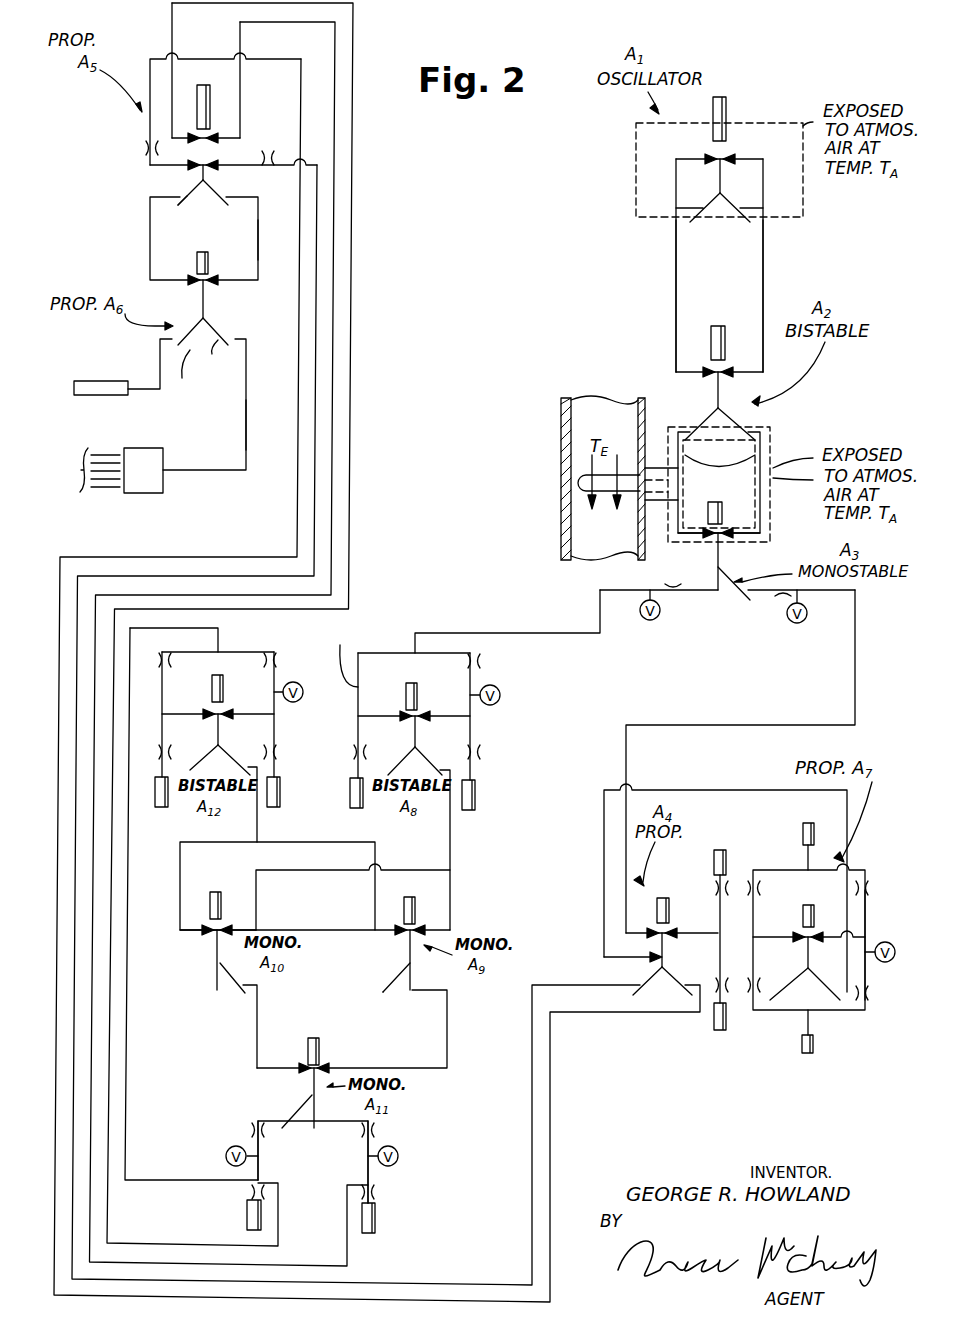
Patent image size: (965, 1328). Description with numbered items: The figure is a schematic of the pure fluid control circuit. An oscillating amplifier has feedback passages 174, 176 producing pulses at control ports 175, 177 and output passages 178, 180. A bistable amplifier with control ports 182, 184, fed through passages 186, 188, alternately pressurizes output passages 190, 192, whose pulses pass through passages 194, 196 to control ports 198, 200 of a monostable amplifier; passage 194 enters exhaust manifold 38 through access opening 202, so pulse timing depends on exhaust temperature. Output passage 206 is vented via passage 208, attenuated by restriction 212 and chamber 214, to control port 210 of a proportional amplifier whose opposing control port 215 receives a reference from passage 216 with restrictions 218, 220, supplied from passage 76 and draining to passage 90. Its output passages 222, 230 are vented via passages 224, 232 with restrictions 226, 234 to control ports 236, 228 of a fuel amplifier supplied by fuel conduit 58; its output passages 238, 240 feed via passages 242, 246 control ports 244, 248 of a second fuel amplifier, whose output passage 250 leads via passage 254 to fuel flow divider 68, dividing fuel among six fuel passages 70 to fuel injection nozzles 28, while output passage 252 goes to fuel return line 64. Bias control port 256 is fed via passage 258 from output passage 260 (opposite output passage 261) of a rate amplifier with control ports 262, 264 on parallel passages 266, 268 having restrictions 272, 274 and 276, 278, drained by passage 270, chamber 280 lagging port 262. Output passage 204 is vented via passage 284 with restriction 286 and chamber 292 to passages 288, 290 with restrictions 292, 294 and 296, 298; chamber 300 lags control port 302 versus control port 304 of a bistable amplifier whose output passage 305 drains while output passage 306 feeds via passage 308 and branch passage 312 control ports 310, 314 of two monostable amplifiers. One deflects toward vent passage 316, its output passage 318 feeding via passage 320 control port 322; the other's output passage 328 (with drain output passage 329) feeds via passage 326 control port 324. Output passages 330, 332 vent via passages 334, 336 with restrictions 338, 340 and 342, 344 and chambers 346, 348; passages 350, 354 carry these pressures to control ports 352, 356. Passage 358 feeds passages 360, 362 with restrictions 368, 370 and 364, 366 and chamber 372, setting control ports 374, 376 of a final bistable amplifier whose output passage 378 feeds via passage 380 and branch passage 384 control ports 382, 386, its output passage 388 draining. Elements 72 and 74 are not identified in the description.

The fuel injection nozzles 28 is at (73, 494).
The exhaust manifold 38 is at (562, 427).
The fuel conduit 58 is at (198, 98).
The fuel return line 64 is at (94, 380).
The fuel flow divider 68 is at (160, 486).
The fuel passages 70 is at (98, 456).
The restrictor element 72 is at (728, 98).
The restrictor element 74 is at (204, 690).
The passage 76 is at (656, 900).
The passage 90 is at (170, 802).
The feedback passage 174 is at (746, 160).
The control port 175 is at (730, 156).
The feedback passage 176 is at (686, 156).
The control port 177 is at (708, 156).
The output passage 178 is at (730, 205).
The output passage 180 is at (710, 205).
The control port 182 is at (728, 376).
The control port 184 is at (718, 376).
The passage 186 is at (763, 276).
The passage 188 is at (675, 272).
The output passage 190 is at (712, 410).
The output passage 192 is at (742, 424).
The passage 194 is at (666, 424).
The passage 196 is at (769, 449).
The control port 198 is at (704, 546).
The control port 200 is at (726, 546).
The access opening 202 is at (626, 460).
The output passage 204 is at (714, 594).
The output passage 206 is at (740, 610).
The passage 208 is at (804, 724).
The control port 210 is at (652, 937).
The restriction 212 is at (814, 598).
The chamber 214 is at (797, 626).
The control port 215 is at (666, 942).
The passage 216 is at (720, 904).
The restriction 218 is at (714, 882).
The restriction 220 is at (737, 1020).
The output passage 222 is at (685, 975).
The passage 224 is at (170, 58).
The restriction 226 is at (138, 161).
The control port 228 is at (210, 172).
The output passage 230 is at (655, 989).
The passage 232 is at (200, 58).
The restriction 234 is at (267, 172).
The control port 236 is at (196, 172).
The output passage 238 is at (214, 198).
The output passage 240 is at (188, 200).
The passage 242 is at (258, 219).
The control port 244 is at (212, 286).
The passage 246 is at (148, 232).
The control port 248 is at (200, 286).
The output passage 250 is at (204, 404).
The output passage 252 is at (180, 379).
The passage 254 is at (248, 386).
The control port 256 is at (648, 962).
The passage 258 is at (603, 853).
The output passage 260 is at (805, 989).
The output passage 261 is at (784, 1004).
The control port 262 is at (812, 942).
The control port 264 is at (804, 942).
The air flow passage 266 is at (848, 913).
The air flow passage 268 is at (738, 908).
The passage 270 is at (814, 1048).
The restriction 272 is at (854, 883).
The restriction 274 is at (866, 1000).
The restriction 276 is at (749, 884).
The restriction 278 is at (750, 976).
The chamber 280 is at (886, 961).
The passage 284 is at (540, 628).
The restriction 286 is at (674, 638).
The passage 288 is at (497, 677).
The passage 290 is at (345, 654).
The chamber 292 is at (482, 664).
The restriction 294 is at (482, 748).
The restriction 296 is at (359, 658).
The restriction 298 is at (352, 750).
The chamber 300 is at (502, 698).
The control port 302 is at (420, 714).
The control port 304 is at (408, 712).
The output passage 305 is at (402, 762).
The output passage 306 is at (428, 762).
The passage 308 is at (480, 874).
The control port 310 is at (429, 932).
The branch passage 312 is at (394, 869).
The control port 314 is at (220, 926).
The vent passage 316 is at (373, 974).
The output passage 318 is at (404, 986).
The passage 320 is at (432, 1030).
The control port 322 is at (318, 1064).
The control port 324 is at (313, 1064).
The passage 326 is at (257, 1024).
The output passage 328 is at (259, 976).
The output passage 329 is at (216, 990).
The output passage 330 is at (314, 1110).
The output passage 332 is at (300, 1104).
The passage 334 is at (382, 1136).
The passage 336 is at (256, 1112).
The restriction 338 is at (378, 1116).
The restriction 340 is at (373, 1190).
The restriction 342 is at (251, 1130).
The restriction 344 is at (253, 1194).
The chamber 346 is at (398, 1158).
The chamber 348 is at (225, 1160).
The passage 350 is at (352, 186).
The control port 352 is at (219, 140).
The passage 354 is at (334, 221).
The control port 356 is at (198, 85).
The passage 358 is at (130, 1054).
The passage 360 is at (236, 652).
The passage 362 is at (192, 652).
The restriction 364 is at (156, 666).
The restriction 366 is at (156, 750).
The restriction 368 is at (276, 662).
The restriction 370 is at (276, 754).
The chamber 372 is at (296, 702).
The control port 374 is at (224, 712).
The control port 376 is at (213, 712).
The output passage 378 is at (232, 768).
The passage 380 is at (240, 836).
The control port 382 is at (210, 943).
The branch passage 384 is at (316, 840).
The control port 386 is at (405, 944).
The output passage 388 is at (206, 768).